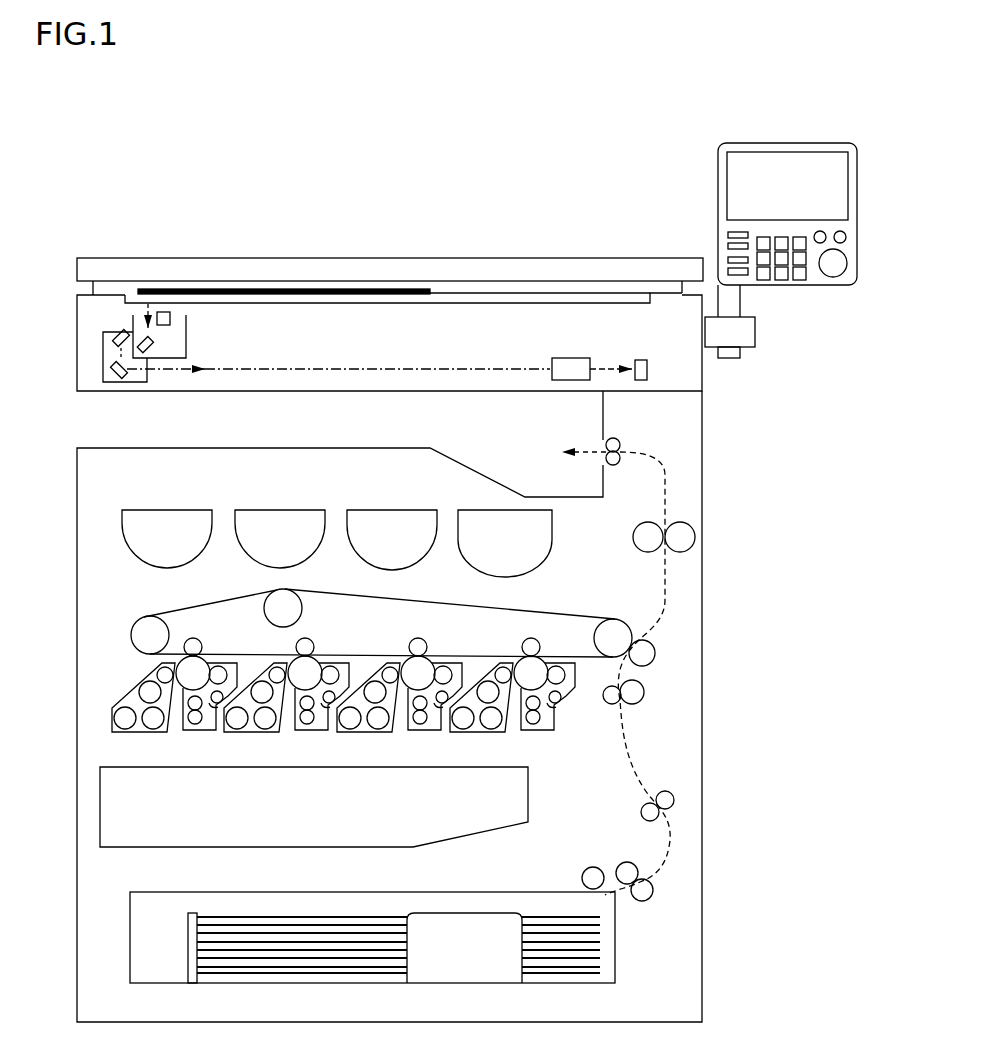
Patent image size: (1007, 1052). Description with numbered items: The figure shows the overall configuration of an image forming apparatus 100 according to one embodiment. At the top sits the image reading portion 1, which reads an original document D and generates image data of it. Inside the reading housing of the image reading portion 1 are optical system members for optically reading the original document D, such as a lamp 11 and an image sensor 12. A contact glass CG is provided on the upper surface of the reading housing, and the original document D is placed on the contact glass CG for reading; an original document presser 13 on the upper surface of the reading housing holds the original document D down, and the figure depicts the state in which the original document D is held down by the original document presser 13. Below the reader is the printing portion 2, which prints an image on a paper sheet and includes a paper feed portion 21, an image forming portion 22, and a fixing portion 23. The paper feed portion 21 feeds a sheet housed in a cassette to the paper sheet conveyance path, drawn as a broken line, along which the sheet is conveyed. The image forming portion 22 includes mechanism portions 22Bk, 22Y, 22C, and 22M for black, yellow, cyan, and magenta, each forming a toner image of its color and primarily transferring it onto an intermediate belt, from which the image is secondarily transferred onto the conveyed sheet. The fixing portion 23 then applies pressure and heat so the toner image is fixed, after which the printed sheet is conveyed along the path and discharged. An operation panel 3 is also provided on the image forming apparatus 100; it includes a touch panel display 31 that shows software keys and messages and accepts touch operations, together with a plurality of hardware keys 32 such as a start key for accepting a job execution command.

The image forming apparatus 100 is at (152, 240).
The image reading portion 1 is at (703, 382).
The printing portion 2 is at (703, 447).
The operation panel 3 is at (716, 186).
The touch panel display 31 is at (779, 170).
The hardware keys 32 is at (833, 273).
The lamp 11 is at (170, 318).
The image sensor 12 is at (640, 357).
The original document presser 13 is at (458, 268).
The original document D is at (394, 291).
The contact glass CG is at (479, 304).
The fixing portion 23 is at (620, 538).
The image forming portion 22 is at (562, 739).
The mechanism portion for magenta 22M is at (153, 735).
The mechanism portion for cyan 22C is at (250, 735).
The mechanism portion for yellow 22Y is at (363, 735).
The mechanism portion for black 22Bk is at (480, 735).
The paper feed portion 21 is at (595, 861).